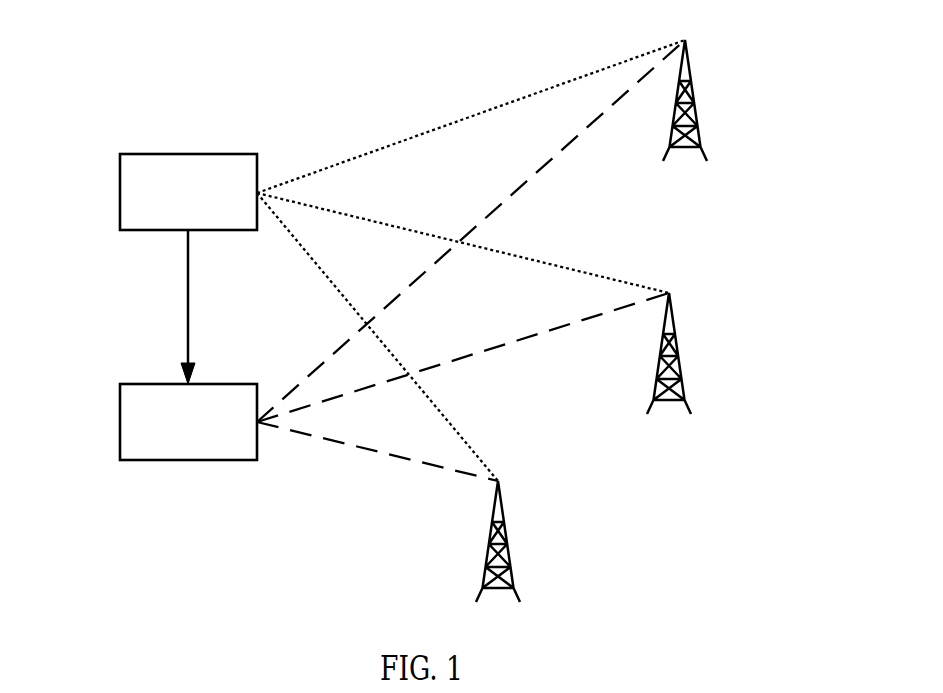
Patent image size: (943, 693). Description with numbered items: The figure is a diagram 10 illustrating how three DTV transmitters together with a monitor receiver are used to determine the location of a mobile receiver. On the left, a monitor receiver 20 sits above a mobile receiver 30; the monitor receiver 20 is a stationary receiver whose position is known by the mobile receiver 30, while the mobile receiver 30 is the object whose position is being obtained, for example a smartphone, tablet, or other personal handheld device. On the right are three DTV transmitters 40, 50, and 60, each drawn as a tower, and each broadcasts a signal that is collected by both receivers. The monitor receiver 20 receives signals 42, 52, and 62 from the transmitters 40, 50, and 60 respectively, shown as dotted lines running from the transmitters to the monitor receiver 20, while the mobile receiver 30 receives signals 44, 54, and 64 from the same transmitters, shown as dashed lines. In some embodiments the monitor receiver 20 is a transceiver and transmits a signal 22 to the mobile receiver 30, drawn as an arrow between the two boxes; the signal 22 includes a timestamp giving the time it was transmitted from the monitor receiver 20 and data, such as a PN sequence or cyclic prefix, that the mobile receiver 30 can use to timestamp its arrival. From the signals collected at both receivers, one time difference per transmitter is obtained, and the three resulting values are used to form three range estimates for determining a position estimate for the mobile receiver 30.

The diagram 10 is at (104, 66).
The monitor receiver 20 is at (120, 193).
The signal 22 is at (188, 292).
The mobile receiver 30 is at (120, 420).
The transmitter 40 is at (700, 138).
The signal 42 is at (453, 122).
The signal 44 is at (512, 197).
The transmitter 50 is at (683, 387).
The signal 52 is at (578, 270).
The signal 54 is at (492, 350).
The transmitter 60 is at (513, 575).
The signal 62 is at (467, 440).
The signal 64 is at (377, 452).